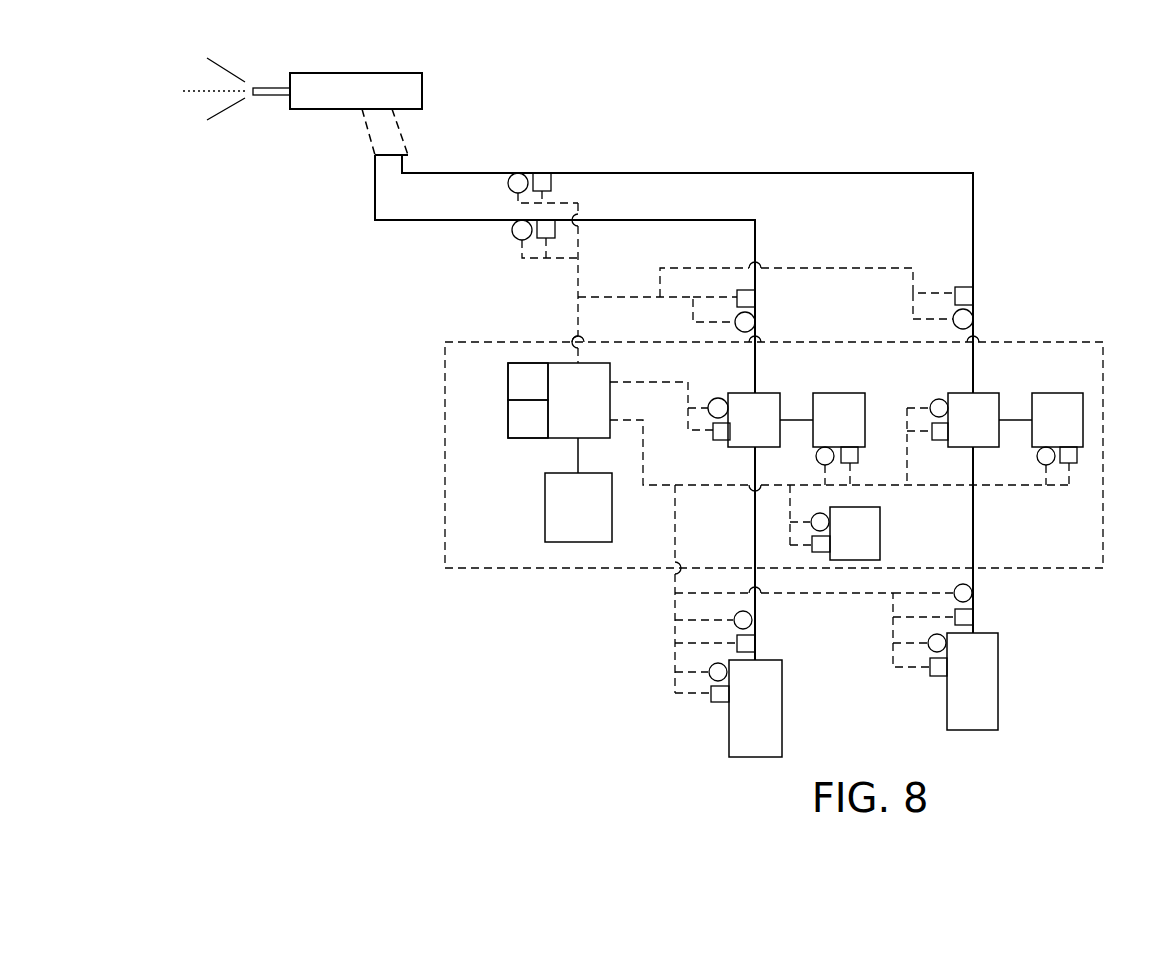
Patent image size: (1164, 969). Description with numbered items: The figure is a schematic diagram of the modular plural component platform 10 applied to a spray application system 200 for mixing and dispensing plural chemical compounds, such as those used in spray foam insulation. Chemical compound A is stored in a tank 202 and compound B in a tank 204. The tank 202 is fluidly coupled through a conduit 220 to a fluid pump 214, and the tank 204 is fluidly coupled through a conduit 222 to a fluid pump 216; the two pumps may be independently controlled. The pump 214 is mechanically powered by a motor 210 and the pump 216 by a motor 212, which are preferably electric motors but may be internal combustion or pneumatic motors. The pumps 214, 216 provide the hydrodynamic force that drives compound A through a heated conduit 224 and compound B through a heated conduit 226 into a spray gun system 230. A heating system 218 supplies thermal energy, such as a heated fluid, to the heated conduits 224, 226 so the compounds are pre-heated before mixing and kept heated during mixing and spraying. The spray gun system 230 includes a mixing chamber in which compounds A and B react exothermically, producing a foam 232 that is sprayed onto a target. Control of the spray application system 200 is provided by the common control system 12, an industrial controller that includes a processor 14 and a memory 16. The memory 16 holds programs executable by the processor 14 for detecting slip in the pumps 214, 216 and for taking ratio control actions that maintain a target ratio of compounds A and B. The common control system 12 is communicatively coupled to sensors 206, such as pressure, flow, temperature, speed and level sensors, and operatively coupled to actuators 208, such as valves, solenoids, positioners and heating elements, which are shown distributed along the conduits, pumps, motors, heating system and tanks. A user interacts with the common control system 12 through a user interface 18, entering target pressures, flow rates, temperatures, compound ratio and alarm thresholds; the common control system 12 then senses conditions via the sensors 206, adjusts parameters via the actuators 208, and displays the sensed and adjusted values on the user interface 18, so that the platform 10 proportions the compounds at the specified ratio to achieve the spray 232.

The spray application system 200 is at (992, 66).
The spray gun system 230 is at (422, 90).
The foam 232 is at (238, 145).
The heated conduit 226 is at (458, 173).
The heated conduit 224 is at (430, 220).
The modular plural component platform 10 is at (1103, 457).
The common control system 12 is at (566, 412).
The memory 16 is at (508, 395).
The processor 14 is at (508, 420).
The user interface 18 is at (566, 519).
The fluid pump 214 is at (735, 432).
The motor 210 is at (820, 432).
The fluid pump 216 is at (954, 432).
The motor 212 is at (1038, 432).
The heating system 218 is at (836, 545).
The conduit 220 is at (755, 533).
The conduit 222 is at (973, 540).
The tank 202 is at (782, 708).
The tank 204 is at (998, 680).
The sensors 206 is at (725, 665).
The actuators 208 is at (722, 703).